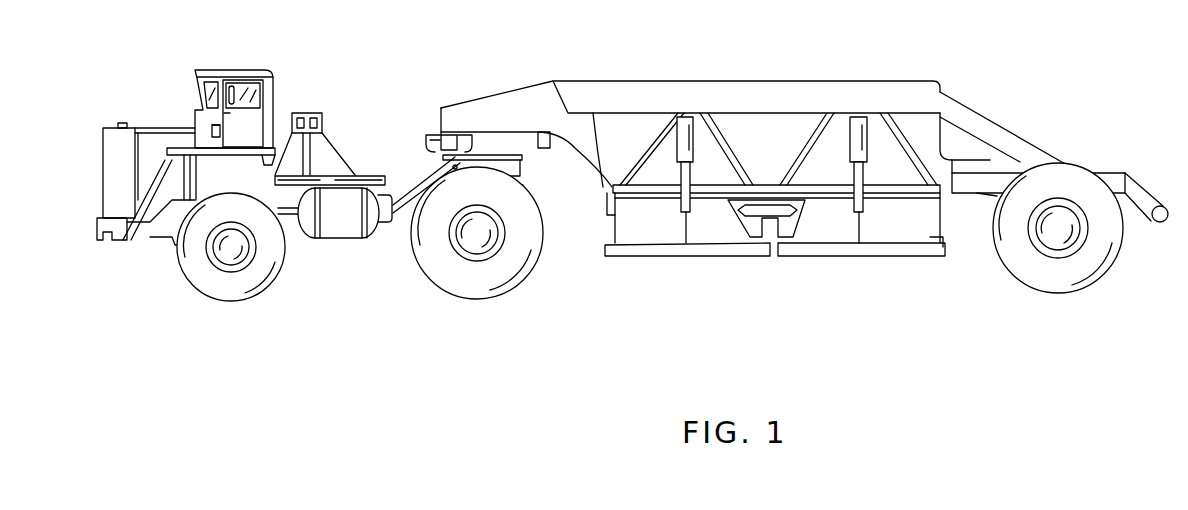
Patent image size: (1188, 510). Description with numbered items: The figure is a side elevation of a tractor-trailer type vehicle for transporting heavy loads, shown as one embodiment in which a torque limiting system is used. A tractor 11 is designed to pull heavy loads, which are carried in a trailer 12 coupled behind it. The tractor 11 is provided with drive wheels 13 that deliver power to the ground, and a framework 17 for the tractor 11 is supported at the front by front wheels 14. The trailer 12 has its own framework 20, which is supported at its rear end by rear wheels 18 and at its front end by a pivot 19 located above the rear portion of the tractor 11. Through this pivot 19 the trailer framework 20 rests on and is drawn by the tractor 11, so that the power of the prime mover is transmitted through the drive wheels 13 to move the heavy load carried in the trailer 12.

The tractor 11 is at (233, 70).
The trailer 12 is at (783, 81).
The drive wheels 13 is at (508, 288).
The front wheels 14 is at (212, 294).
The framework 17 is at (368, 178).
The rear wheels 18 is at (1112, 270).
The pivot 19 is at (448, 133).
The framework 20 is at (973, 164).